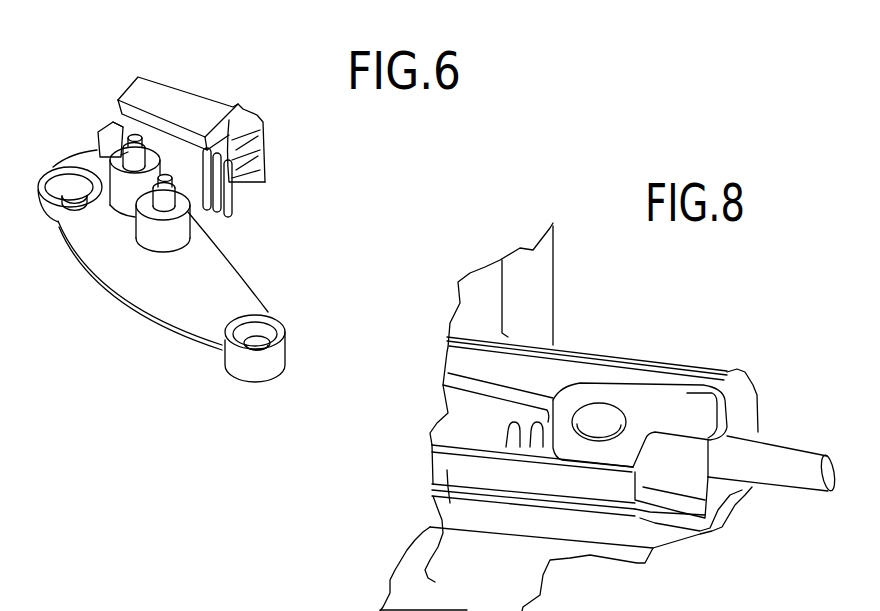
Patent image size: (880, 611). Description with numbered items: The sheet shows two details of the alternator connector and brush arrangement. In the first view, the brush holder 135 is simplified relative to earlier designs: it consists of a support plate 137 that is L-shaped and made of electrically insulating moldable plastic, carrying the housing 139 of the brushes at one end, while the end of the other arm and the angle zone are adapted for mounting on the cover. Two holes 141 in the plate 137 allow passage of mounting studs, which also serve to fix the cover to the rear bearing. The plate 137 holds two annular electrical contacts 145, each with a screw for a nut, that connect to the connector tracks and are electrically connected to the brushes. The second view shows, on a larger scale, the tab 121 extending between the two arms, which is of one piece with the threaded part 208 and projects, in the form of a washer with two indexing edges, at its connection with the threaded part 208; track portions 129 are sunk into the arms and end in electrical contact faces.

In FIG. 6, the housing of the brushes 139 is at (200, 118).
In FIG. 6, the annular electrical contacts 145 is at (190, 213).
In FIG. 6, the brush holder 135 is at (107, 300).
In FIG. 6, the support plate 137 is at (160, 305).
In FIG. 6, the holes 141 is at (262, 345).
In FIG. 8, the portion of the track 129 is at (536, 370).
In FIG. 8, the tab 121 is at (632, 400).
In FIG. 8, the threaded part 208 is at (787, 440).